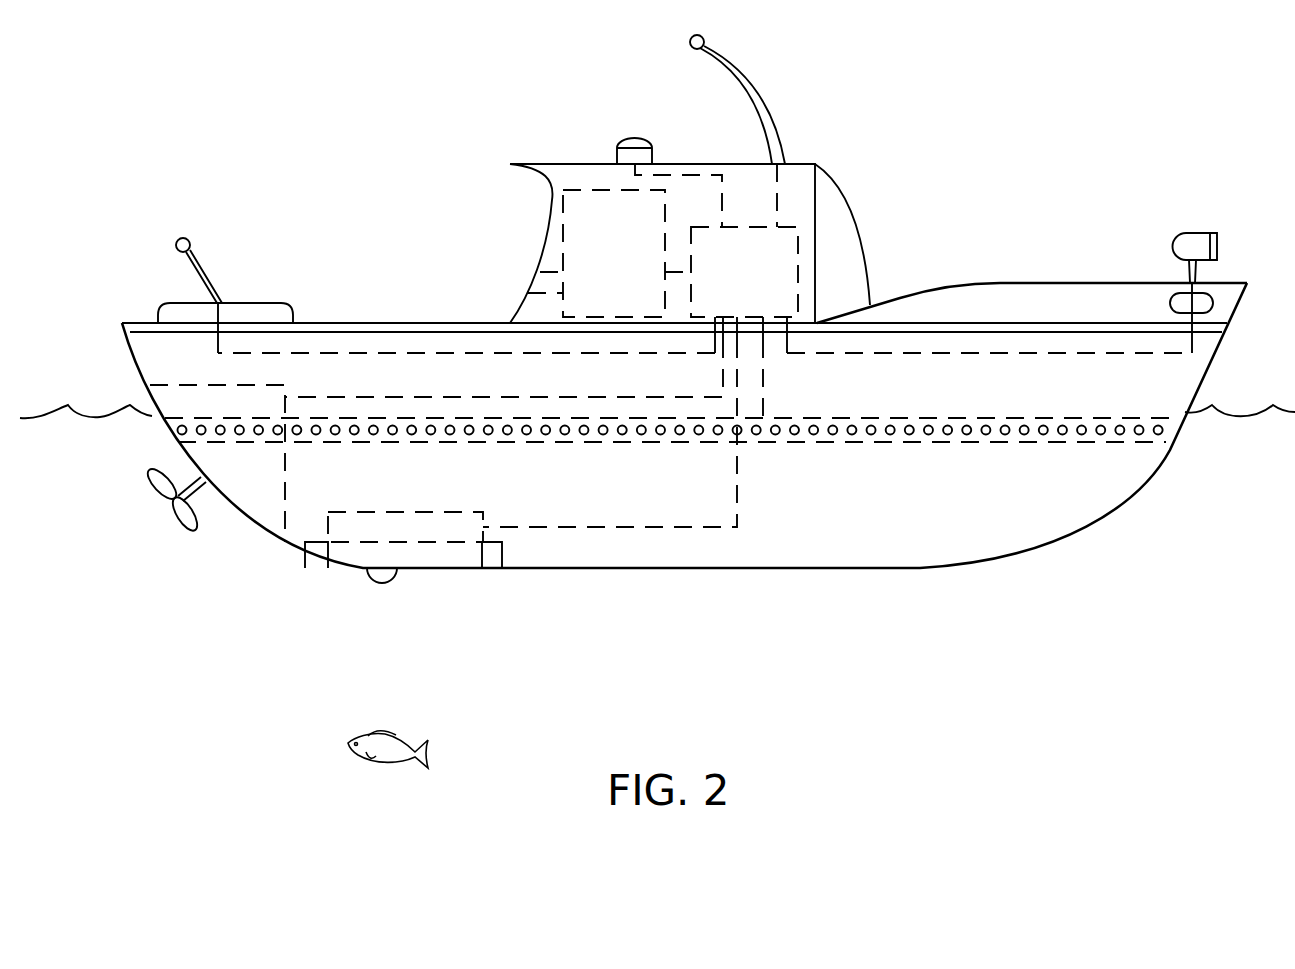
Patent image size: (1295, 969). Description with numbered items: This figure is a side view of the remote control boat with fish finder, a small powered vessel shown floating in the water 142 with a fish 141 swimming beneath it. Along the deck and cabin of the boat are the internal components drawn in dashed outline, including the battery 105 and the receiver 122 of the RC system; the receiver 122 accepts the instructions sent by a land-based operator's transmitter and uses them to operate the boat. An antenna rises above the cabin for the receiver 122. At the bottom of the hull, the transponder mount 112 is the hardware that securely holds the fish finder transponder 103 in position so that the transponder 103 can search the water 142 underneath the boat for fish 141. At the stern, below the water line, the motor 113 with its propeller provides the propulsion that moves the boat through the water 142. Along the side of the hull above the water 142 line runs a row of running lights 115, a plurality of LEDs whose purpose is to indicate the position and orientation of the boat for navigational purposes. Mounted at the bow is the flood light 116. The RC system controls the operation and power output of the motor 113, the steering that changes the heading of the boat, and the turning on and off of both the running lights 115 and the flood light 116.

The fish finder transponder 103 is at (447, 518).
The battery 105 is at (585, 220).
The transponder mount 112 is at (502, 553).
The motor 113 is at (237, 487).
The running lights 115 is at (1046, 430).
The flood light 116 is at (1192, 240).
The receiver 122 is at (765, 118).
The fish 141 is at (390, 742).
The water 142 is at (78, 405).